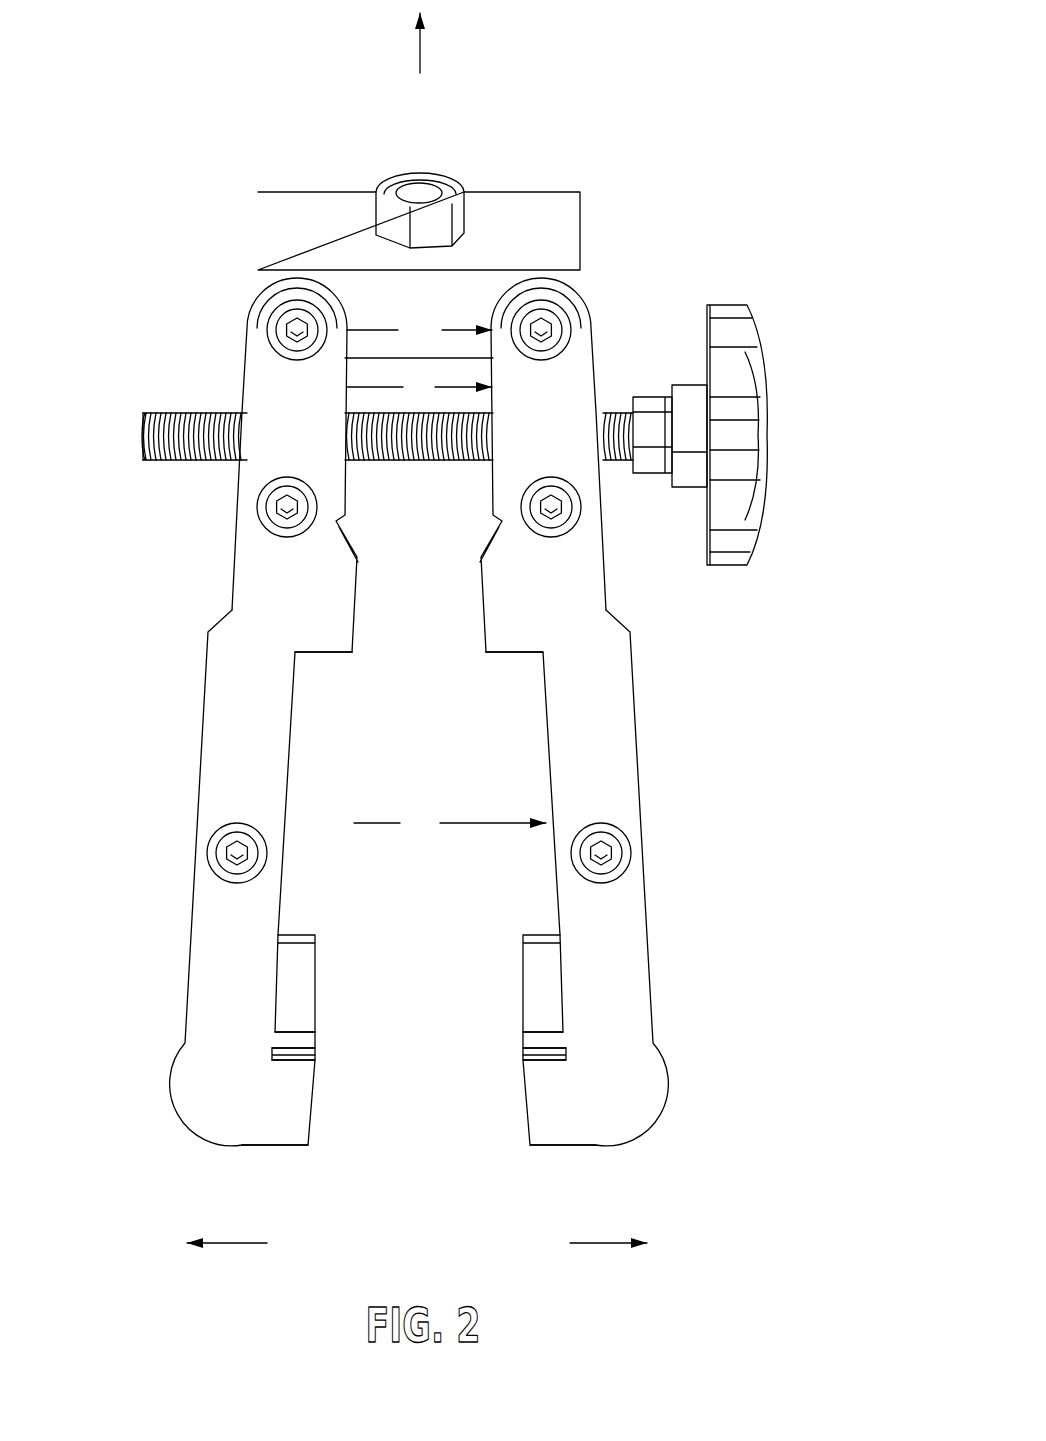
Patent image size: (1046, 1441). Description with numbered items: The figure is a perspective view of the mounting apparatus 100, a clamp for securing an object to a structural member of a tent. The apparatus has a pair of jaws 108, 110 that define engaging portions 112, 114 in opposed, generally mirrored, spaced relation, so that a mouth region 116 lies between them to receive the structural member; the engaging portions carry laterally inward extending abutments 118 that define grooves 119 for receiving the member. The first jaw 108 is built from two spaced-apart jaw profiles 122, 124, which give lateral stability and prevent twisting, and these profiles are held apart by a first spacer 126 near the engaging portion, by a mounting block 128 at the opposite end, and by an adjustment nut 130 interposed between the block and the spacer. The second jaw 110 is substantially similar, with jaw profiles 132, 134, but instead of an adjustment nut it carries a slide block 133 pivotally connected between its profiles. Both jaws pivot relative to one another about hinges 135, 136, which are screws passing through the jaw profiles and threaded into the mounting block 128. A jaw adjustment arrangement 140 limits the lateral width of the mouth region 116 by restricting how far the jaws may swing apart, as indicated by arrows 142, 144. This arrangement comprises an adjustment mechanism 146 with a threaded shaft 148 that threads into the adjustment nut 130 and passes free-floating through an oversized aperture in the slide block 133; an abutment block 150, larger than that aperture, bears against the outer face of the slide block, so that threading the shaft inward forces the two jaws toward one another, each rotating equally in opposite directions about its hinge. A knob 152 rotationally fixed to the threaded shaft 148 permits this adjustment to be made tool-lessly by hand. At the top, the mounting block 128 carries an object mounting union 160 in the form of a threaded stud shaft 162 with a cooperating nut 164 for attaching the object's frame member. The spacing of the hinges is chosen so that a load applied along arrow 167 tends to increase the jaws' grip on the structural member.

The mounting apparatus 100 is at (357, 100).
The jaw 108 is at (192, 1135).
The jaw 110 is at (643, 1135).
The engaging portion 112 is at (337, 1045).
The engaging portion 114 is at (328, 980).
The mouth region 116 is at (397, 1178).
The abutment 118 is at (333, 640).
The groove 119 is at (507, 980).
The jaw profile 122 is at (262, 1130).
The jaw profile 124 is at (305, 962).
The first spacer 126 is at (160, 832).
The mounting block 128 is at (503, 210).
The adjustment nut 130 is at (232, 402).
The jaw profile 132 is at (572, 1130).
The slide block 133 is at (613, 487).
The jaw profile 134 is at (533, 962).
The hinge 135 is at (257, 323).
The hinge 136 is at (578, 323).
The jaw adjustment arrangement 140 is at (777, 393).
The arrow 142 is at (237, 1243).
The arrow 144 is at (598, 1243).
The adjustment mechanism 146 is at (168, 412).
The threaded shaft 148 is at (417, 458).
The abutment block 150 is at (650, 397).
The knob 152 is at (768, 443).
The object mounting union 160 is at (455, 153).
The threaded stud shaft 162 is at (407, 192).
The nut 164 is at (378, 215).
The arrow 167 is at (420, 57).